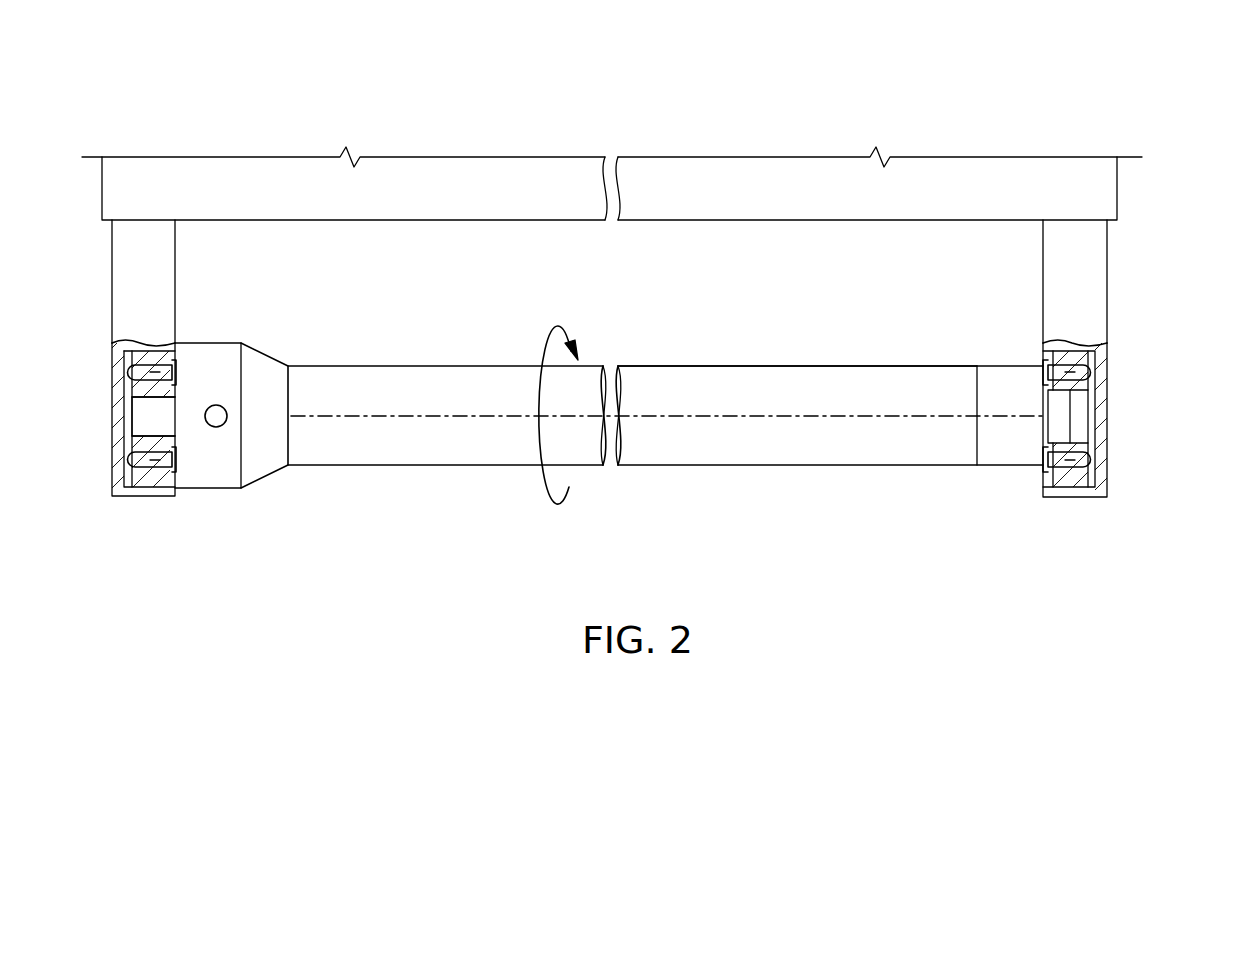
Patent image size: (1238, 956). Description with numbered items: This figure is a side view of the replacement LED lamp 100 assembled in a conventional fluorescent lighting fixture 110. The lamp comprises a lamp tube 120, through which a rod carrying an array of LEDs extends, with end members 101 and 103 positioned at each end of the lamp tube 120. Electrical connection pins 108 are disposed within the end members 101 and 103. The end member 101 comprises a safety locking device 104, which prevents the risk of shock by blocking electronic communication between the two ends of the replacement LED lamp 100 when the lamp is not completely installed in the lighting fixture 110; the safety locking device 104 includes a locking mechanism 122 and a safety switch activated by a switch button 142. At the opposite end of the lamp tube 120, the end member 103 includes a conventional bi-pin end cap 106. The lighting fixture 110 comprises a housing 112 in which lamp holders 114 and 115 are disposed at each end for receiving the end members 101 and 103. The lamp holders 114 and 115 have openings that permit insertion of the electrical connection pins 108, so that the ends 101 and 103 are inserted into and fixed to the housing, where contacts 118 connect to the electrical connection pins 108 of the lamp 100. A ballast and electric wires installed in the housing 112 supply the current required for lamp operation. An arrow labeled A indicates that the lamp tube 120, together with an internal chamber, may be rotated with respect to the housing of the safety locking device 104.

The replacement LED lamp 100 is at (685, 490).
The end member 101 is at (208, 505).
The end member 103 is at (1028, 495).
The safety locking device 104 is at (205, 478).
The bi-pin end cap 106 is at (1005, 455).
The electrical connection pins 108 is at (158, 350).
The lighting fixture 110 is at (684, 98).
The housing 112 is at (731, 200).
The lamp holder 114 is at (130, 258).
The lamp holder 115 is at (1087, 272).
The contacts 118 is at (125, 353).
The lamp tube 120 is at (675, 405).
The locking mechanism 122 is at (138, 420).
The switch button 142 is at (216, 404).